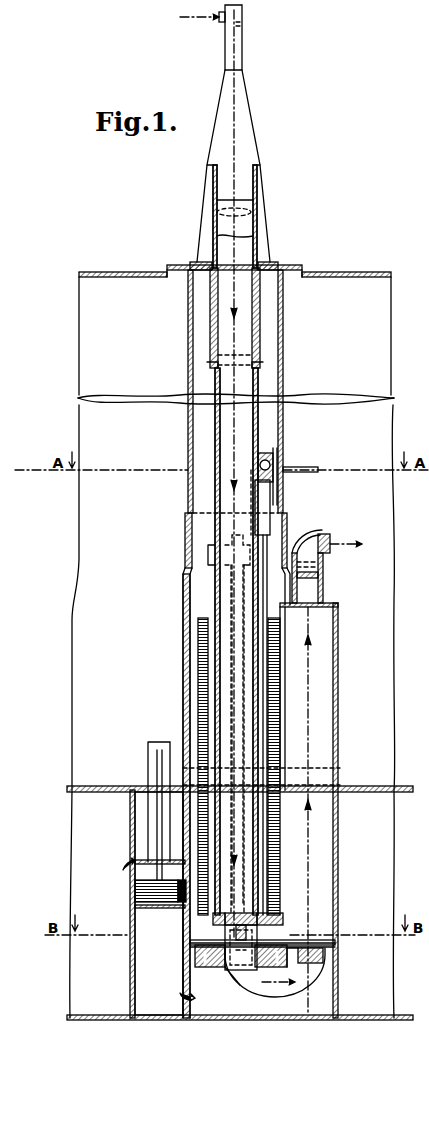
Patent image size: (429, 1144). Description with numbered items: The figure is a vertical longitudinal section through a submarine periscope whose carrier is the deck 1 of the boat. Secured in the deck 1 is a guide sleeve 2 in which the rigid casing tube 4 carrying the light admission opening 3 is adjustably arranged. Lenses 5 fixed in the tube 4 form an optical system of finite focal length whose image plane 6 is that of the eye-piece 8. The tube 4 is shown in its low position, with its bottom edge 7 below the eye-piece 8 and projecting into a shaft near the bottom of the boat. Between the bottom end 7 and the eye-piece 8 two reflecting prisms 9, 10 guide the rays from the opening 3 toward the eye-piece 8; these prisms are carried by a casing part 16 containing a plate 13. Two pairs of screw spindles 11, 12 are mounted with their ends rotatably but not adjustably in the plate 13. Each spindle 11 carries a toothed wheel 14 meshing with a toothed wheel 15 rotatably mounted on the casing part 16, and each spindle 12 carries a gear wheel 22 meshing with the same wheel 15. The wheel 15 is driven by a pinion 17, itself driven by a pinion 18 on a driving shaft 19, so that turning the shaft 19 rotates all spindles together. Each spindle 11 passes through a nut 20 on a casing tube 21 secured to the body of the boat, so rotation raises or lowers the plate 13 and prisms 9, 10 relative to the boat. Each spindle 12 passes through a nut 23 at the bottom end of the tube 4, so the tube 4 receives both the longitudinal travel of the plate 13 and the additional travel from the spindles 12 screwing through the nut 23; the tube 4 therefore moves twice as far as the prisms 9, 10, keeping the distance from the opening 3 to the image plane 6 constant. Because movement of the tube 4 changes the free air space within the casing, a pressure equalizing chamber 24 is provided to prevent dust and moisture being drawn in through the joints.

The deck 1 is at (343, 265).
The guide sleeve 2 is at (258, 200).
The light admission opening 3 is at (222, 20).
The rigid casing tube 4 is at (239, 117).
The lenses 5 is at (236, 211).
The image plane 6 is at (323, 558).
The bottom edge 7 is at (273, 930).
The eye-piece 8 is at (326, 543).
The reflecting prism 9 is at (233, 978).
The reflecting prism 10 is at (317, 975).
The screw spindles 11 is at (232, 600).
The screw spindles 12 is at (198, 687).
The plate 13 is at (185, 962).
The toothed wheel 14 is at (258, 940).
The toothed wheel 15 is at (200, 890).
The casing part 16 is at (222, 965).
The pinion 17 is at (256, 480).
The pinion 18 is at (273, 455).
The driving shaft 19 is at (300, 470).
The nut 20 is at (208, 552).
The casing tube 21 is at (285, 380).
The gear wheel 22 is at (193, 947).
The nut 23 is at (200, 922).
The pressure equalizing chamber 24 is at (135, 990).